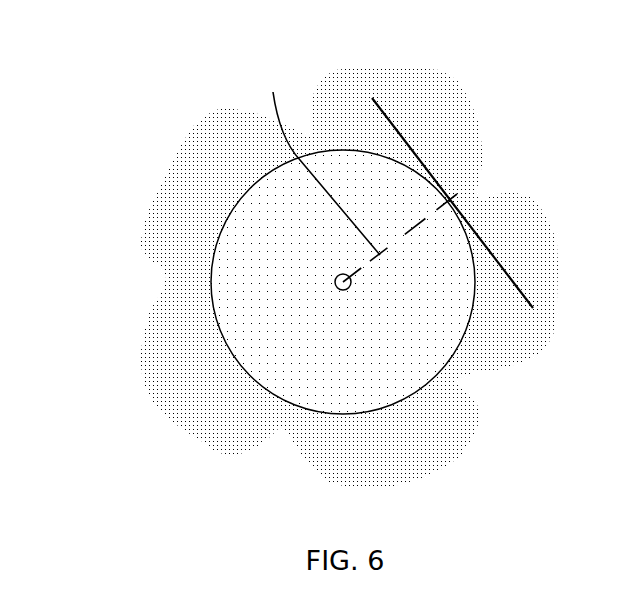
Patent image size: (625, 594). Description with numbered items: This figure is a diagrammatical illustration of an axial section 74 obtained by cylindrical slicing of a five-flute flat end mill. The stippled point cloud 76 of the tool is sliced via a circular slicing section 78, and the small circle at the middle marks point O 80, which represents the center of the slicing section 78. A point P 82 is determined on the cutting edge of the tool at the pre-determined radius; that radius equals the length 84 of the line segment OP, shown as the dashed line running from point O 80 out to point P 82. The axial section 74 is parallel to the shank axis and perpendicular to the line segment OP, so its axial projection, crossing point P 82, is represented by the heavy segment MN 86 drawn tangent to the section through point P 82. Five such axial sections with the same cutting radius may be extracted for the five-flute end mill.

The axial section 74 is at (291, 256).
The point cloud 76 is at (458, 114).
The slicing section 78 is at (211, 282).
The point O 80 is at (336, 277).
The point P 82 is at (442, 215).
The length of line segment OP 84 is at (319, 161).
The segment MN 86 is at (501, 267).